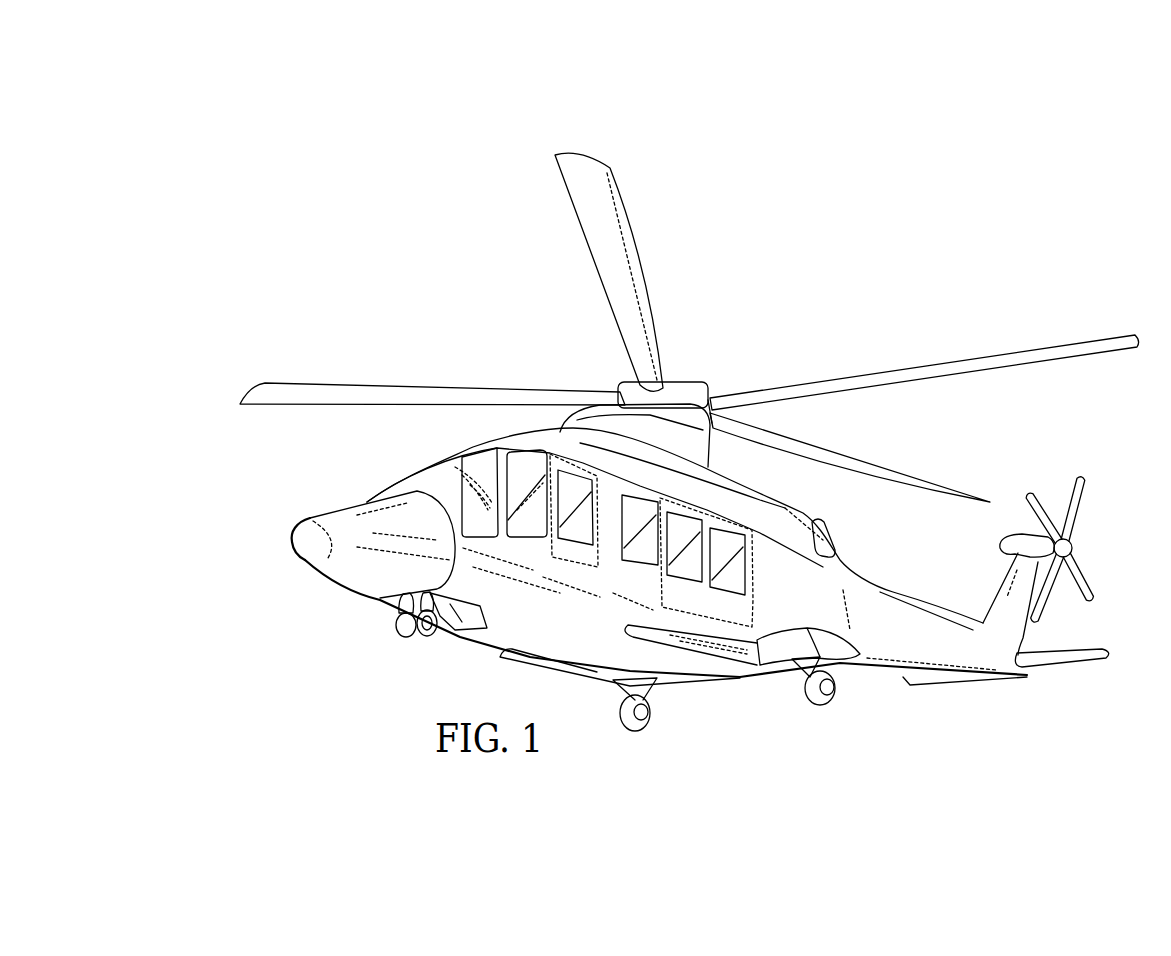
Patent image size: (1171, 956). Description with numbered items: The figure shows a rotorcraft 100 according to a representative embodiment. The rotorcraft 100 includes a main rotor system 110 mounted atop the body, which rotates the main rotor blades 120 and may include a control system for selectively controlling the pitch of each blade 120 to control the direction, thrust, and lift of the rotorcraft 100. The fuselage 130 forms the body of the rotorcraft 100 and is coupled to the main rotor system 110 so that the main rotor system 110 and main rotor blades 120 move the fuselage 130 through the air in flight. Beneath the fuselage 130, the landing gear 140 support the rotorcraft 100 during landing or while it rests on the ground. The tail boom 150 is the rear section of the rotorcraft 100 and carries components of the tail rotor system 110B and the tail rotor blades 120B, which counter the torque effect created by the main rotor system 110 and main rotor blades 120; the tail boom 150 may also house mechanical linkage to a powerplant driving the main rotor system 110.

The rotorcraft 100 is at (379, 144).
The main rotor system 110 is at (693, 383).
The main rotor blades 120 is at (908, 379).
The fuselage 130 is at (343, 517).
The landing gear 140 is at (405, 637).
The tail boom 150 is at (1110, 705).
The tail rotor system 110B is at (1074, 550).
The tail rotor blades 120B is at (1078, 508).